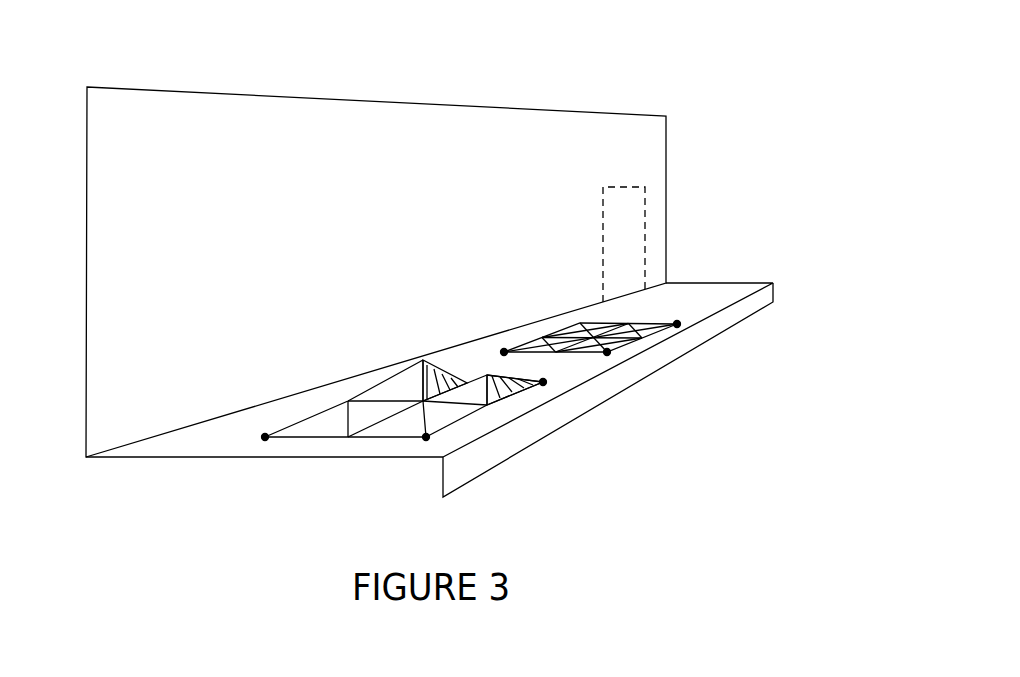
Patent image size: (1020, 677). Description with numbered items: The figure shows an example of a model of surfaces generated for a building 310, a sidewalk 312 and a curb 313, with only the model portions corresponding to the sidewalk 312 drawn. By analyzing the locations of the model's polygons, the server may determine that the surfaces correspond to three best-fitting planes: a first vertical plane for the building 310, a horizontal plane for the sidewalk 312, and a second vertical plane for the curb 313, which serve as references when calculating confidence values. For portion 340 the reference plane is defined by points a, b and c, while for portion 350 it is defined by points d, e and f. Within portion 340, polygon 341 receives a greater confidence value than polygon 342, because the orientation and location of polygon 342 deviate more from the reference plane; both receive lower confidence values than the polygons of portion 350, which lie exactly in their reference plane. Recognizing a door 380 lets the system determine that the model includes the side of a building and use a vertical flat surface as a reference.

The building 310 is at (666, 138).
The door 380 is at (645, 203).
The sidewalk 312 is at (730, 293).
The curb 313 is at (762, 303).
The portion 340 is at (448, 429).
The polygon 341 is at (500, 383).
The polygon 342 is at (424, 398).
The portion 350 is at (631, 345).